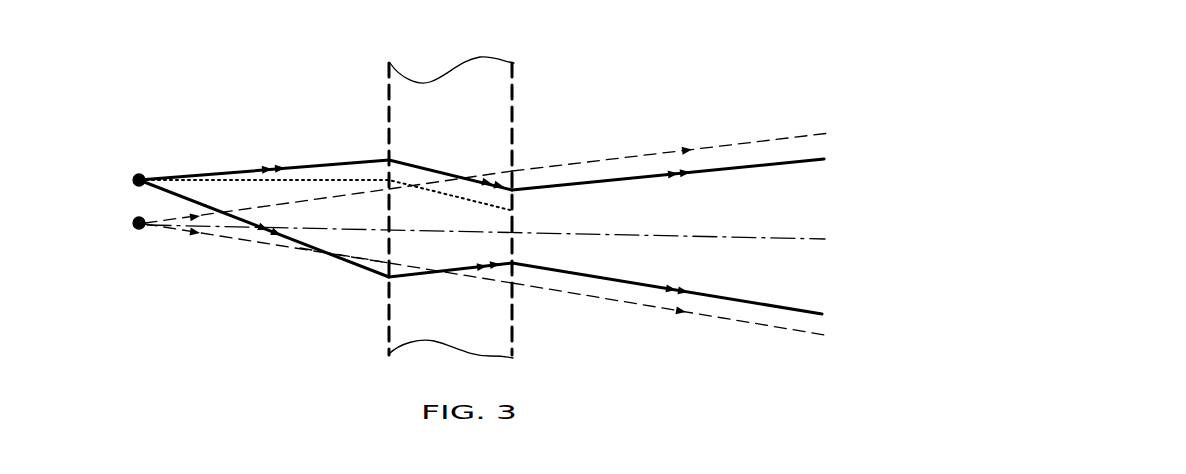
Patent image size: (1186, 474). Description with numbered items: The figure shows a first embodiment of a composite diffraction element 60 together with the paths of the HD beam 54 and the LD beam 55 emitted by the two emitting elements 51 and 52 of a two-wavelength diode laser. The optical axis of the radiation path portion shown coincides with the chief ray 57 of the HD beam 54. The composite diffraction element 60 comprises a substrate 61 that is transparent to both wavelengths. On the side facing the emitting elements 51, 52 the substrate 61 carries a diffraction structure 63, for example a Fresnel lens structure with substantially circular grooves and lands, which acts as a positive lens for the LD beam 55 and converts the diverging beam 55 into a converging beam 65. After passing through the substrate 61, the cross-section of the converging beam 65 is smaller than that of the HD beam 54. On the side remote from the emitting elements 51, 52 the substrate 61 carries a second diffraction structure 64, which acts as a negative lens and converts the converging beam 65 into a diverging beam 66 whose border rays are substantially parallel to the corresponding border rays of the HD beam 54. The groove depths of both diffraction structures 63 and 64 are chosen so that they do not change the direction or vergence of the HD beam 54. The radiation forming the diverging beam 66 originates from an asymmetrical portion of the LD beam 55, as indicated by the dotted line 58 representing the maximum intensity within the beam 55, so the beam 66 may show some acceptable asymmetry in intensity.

The emitting element 51 is at (141, 232).
The emitting element 52 is at (142, 172).
The HD beam 54 is at (215, 212).
The LD beam 55 is at (245, 218).
The chief ray 57 is at (315, 226).
The dotted line 58 is at (315, 180).
The composite diffraction element 60 is at (451, 49).
The substrate 61 is at (500, 119).
The diffraction structure 63 is at (388, 91).
The second diffraction structure 64 is at (515, 93).
The converging beam 65 is at (432, 171).
The diverging beam 66 is at (600, 182).